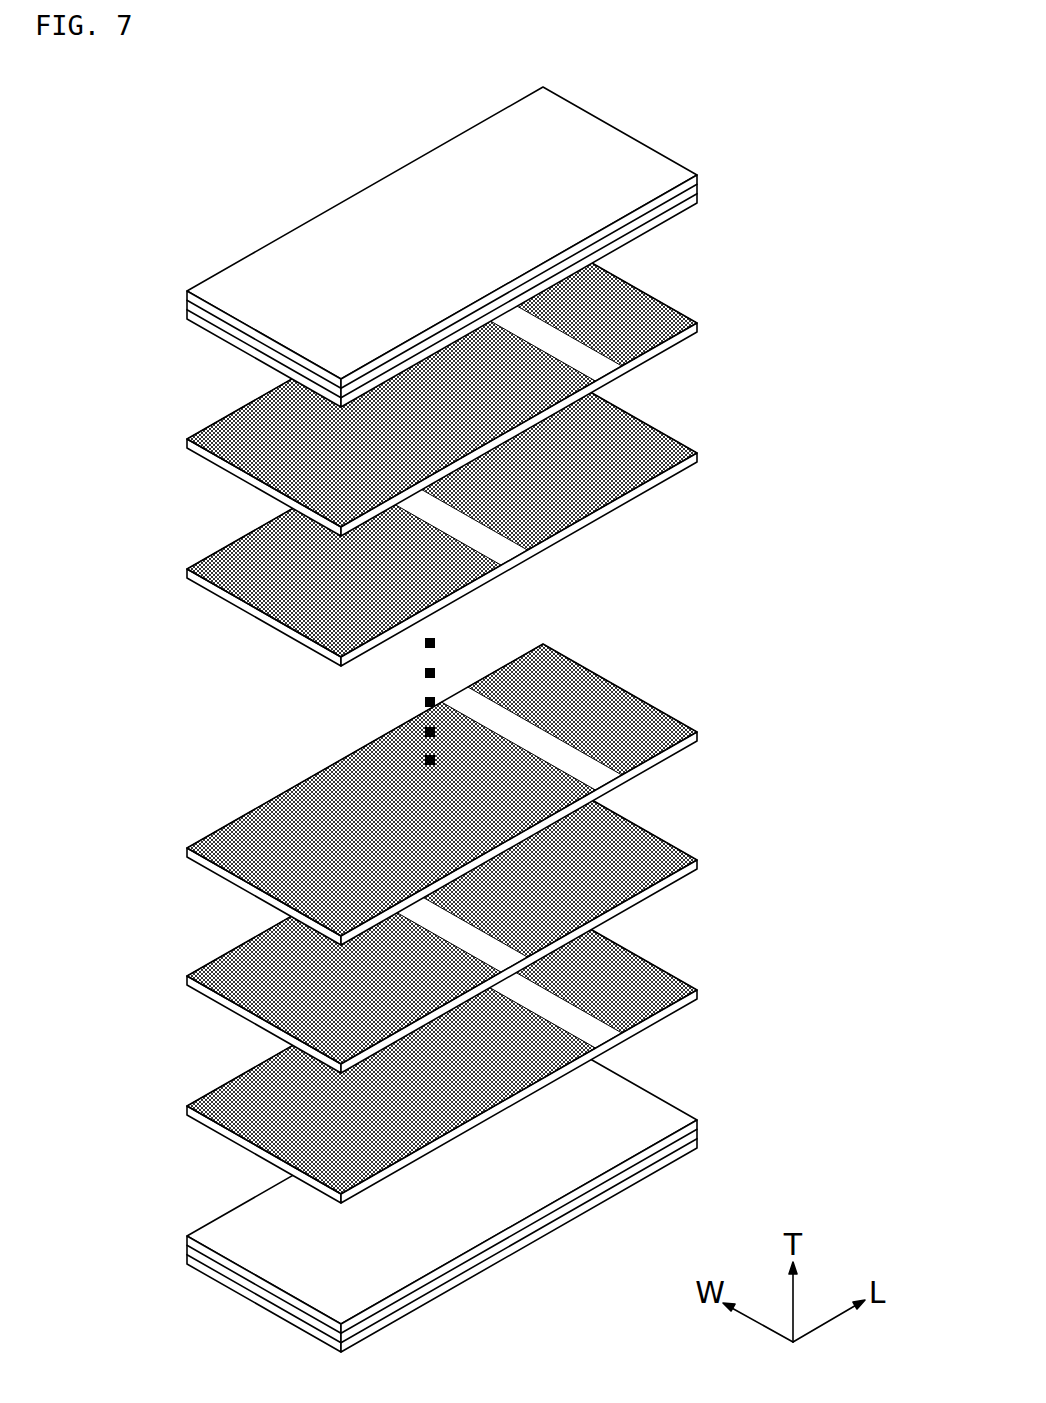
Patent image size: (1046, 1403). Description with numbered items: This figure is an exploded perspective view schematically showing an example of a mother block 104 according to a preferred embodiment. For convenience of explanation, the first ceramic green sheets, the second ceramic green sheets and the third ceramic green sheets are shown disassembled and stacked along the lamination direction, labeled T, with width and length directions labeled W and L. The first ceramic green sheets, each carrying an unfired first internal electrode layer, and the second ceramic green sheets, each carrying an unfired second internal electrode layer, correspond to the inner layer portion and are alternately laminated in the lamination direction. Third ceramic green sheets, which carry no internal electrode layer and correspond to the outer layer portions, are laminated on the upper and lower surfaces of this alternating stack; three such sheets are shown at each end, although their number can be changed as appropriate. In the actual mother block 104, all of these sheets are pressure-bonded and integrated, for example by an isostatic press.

The mother block 104 is at (233, 133).